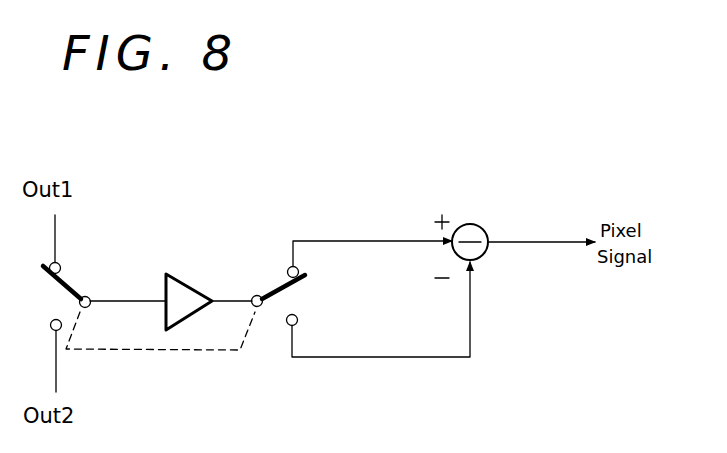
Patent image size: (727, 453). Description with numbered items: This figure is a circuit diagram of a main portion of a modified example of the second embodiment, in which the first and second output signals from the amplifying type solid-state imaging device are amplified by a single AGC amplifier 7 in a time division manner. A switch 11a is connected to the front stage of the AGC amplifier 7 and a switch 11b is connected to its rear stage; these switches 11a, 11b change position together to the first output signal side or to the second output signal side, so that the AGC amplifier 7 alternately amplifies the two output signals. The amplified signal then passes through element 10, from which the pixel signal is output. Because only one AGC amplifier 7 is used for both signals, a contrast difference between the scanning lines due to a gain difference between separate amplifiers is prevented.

The AGC amplifier 7 is at (191, 283).
The subtractor 10 is at (482, 226).
The switch 11a is at (74, 277).
The switch 11b is at (275, 282).